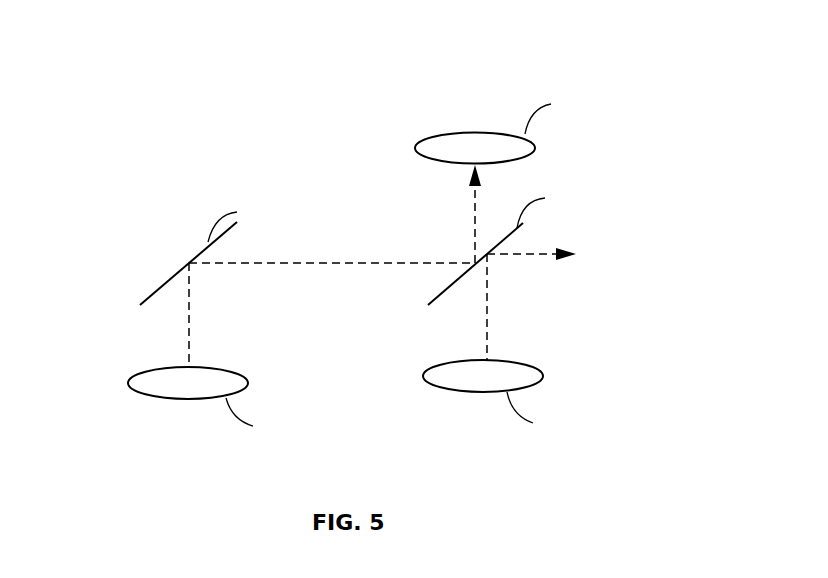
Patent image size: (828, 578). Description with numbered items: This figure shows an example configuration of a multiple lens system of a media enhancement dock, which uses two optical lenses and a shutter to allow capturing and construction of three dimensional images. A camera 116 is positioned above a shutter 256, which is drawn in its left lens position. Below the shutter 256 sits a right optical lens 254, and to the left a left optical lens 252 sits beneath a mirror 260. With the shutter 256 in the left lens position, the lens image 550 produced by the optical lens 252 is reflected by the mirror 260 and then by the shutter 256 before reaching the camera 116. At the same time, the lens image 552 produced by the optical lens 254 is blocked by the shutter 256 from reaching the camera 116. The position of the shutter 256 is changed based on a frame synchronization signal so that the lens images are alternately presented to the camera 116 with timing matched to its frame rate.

The camera 116 is at (425, 134).
The mirror 260 is at (145, 296).
The lens image 550 is at (190, 326).
The shutter 256 is at (433, 296).
The lens image 552 is at (490, 318).
The optical lens 252 is at (138, 370).
The optical lens 254 is at (445, 362).